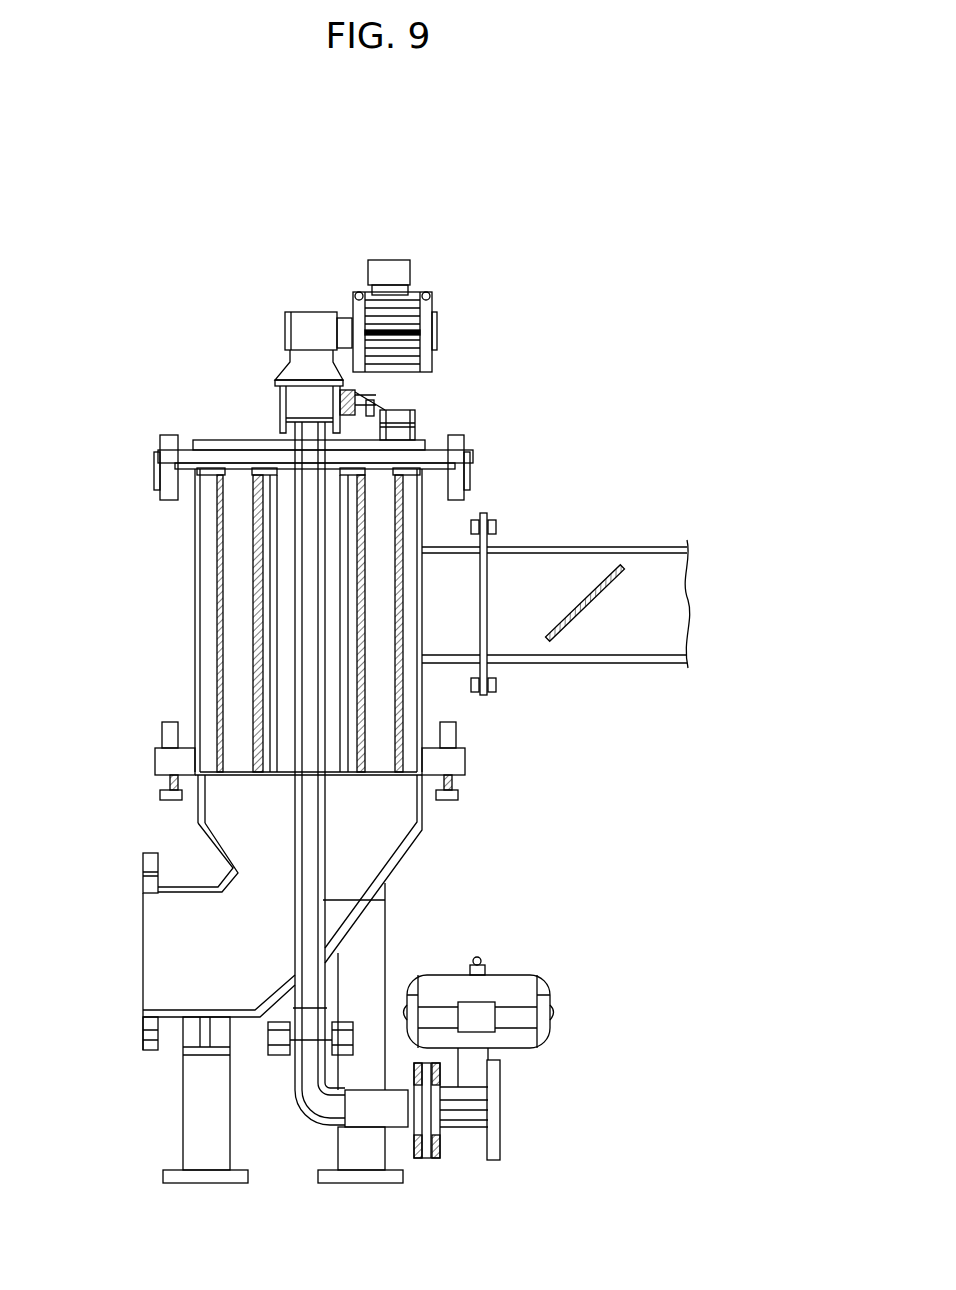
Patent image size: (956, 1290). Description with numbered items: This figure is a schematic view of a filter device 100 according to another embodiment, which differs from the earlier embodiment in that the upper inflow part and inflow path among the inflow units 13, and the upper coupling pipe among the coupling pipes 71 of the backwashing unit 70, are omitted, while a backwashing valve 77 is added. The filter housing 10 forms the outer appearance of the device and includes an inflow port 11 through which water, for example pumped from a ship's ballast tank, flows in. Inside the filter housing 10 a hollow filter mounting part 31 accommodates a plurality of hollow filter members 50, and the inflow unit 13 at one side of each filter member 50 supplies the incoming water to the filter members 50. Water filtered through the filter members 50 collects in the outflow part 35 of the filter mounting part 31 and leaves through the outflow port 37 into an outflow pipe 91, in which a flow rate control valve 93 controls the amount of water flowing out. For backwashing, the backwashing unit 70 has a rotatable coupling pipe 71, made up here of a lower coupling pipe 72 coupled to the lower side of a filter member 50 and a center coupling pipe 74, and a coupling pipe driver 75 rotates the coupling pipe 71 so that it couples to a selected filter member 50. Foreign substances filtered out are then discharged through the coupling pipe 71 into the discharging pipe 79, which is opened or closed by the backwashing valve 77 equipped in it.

The filter device 100 is at (95, 313).
The filter housing 10 is at (195, 601).
The inflow port 11 is at (143, 950).
The inflow unit 13 is at (213, 853).
The filter mounting part 31 is at (200, 812).
The outflow part 35 is at (410, 578).
The outflow port 37 is at (485, 625).
The filter member 50 is at (410, 692).
The backwashing unit 70 is at (610, 822).
The coupling pipe 71 is at (560, 793).
The lower coupling pipe 72 is at (420, 826).
The center coupling pipe 74 is at (387, 900).
The coupling pipe driver 75 is at (423, 307).
The backwashing valve 77 is at (520, 988).
The discharging pipe 79 is at (322, 1100).
The outflow pipe 91 is at (667, 546).
The flow rate control valve 93 is at (626, 556).